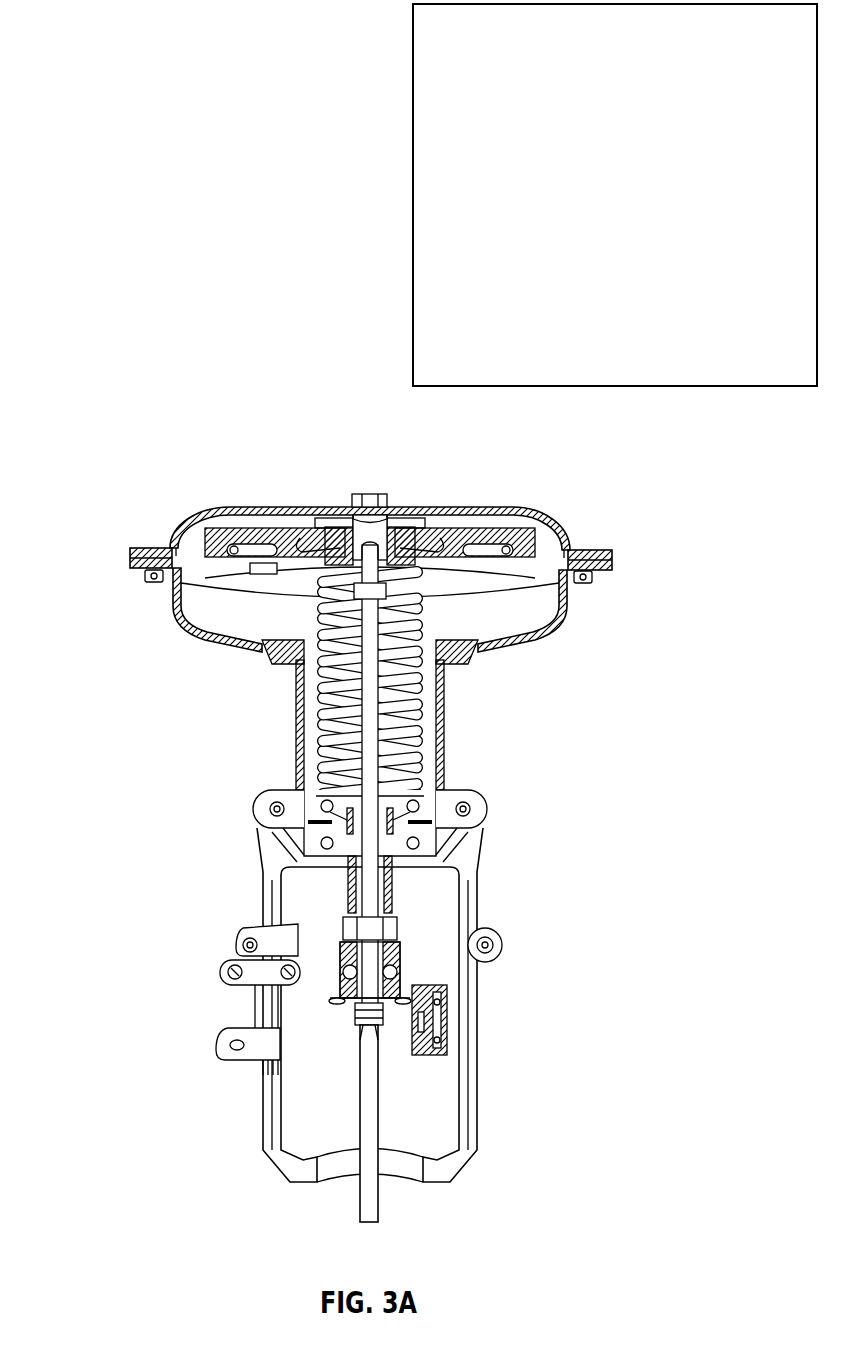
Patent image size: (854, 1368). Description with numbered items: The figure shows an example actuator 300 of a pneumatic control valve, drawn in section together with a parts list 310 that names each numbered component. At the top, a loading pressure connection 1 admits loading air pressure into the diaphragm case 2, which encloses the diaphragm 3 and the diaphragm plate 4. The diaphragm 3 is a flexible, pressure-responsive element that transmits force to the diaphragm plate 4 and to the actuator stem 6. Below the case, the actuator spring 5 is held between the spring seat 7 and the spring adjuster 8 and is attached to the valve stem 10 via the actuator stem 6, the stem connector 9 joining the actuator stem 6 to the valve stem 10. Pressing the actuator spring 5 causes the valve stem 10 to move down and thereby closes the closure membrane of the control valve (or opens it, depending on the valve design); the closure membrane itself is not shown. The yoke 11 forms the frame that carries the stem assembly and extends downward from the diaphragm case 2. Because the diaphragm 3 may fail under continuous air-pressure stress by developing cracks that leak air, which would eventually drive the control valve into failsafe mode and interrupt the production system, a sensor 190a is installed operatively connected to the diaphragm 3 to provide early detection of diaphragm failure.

The loading pressure connection 1 is at (363, 502).
The diaphragm case 2 is at (567, 537).
The diaphragm 3 is at (148, 580).
The diaphragm plate 4 is at (285, 548).
The actuator spring 5 is at (323, 690).
The actuator stem 6 is at (363, 800).
The spring seat 7 is at (268, 868).
The spring adjuster 8 is at (245, 945).
The stem connector 9 is at (400, 952).
The valve stem 10 is at (362, 1060).
The yoke 11 is at (472, 1107).
The sensor 190a is at (262, 578).
The actuator 300 is at (174, 423).
The parts list 310 is at (413, 193).